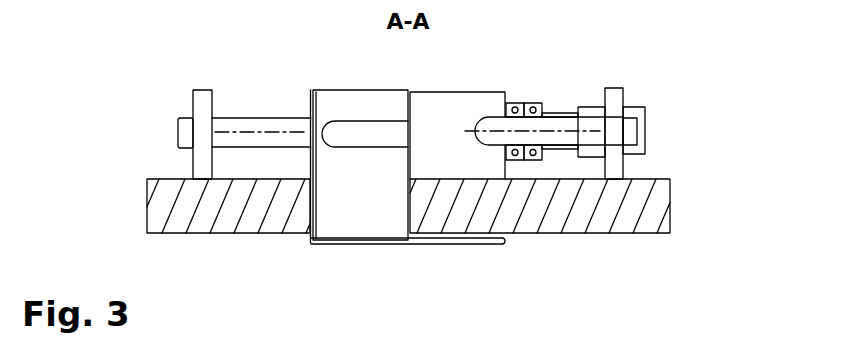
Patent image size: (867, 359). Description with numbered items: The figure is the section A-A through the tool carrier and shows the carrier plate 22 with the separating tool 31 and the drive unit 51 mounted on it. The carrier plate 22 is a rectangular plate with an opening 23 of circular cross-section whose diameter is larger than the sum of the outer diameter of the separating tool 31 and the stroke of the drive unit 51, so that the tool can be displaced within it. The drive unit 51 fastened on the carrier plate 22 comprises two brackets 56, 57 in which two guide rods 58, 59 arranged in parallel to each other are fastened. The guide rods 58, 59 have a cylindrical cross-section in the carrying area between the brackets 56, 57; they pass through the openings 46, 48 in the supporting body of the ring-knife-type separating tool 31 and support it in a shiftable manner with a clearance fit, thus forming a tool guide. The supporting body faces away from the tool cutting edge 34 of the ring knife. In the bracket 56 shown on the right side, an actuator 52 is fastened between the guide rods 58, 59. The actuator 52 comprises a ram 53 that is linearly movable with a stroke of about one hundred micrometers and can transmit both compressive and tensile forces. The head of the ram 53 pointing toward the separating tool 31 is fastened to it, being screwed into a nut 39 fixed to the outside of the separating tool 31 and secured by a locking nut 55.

The carrier plate 22 is at (218, 205).
The opening 23 is at (304, 204).
The separating tool 31 is at (340, 188).
The tool cutting edge 34 is at (443, 245).
The nut 39 is at (515, 108).
The opening 46 is at (476, 135).
The opening 48 is at (328, 120).
The drive unit 51 is at (634, 97).
The actuator 52 is at (703, 137).
The ram 53 is at (555, 115).
The locking nut 55 is at (532, 108).
The bracket 56 is at (615, 112).
The bracket 57 is at (202, 107).
The guide rod 58 is at (187, 127).
The guide rod 59 is at (583, 138).